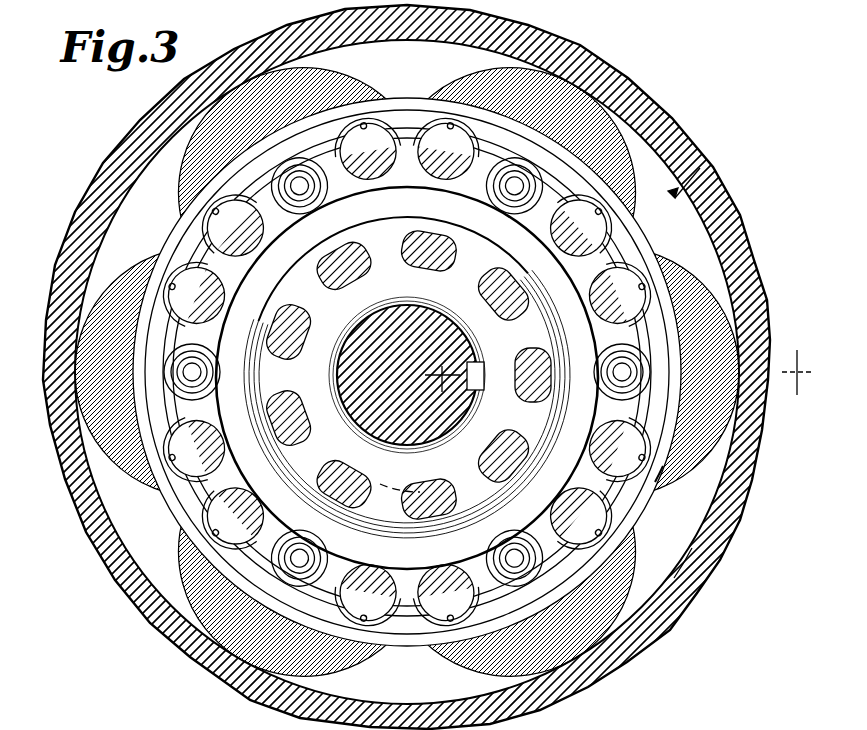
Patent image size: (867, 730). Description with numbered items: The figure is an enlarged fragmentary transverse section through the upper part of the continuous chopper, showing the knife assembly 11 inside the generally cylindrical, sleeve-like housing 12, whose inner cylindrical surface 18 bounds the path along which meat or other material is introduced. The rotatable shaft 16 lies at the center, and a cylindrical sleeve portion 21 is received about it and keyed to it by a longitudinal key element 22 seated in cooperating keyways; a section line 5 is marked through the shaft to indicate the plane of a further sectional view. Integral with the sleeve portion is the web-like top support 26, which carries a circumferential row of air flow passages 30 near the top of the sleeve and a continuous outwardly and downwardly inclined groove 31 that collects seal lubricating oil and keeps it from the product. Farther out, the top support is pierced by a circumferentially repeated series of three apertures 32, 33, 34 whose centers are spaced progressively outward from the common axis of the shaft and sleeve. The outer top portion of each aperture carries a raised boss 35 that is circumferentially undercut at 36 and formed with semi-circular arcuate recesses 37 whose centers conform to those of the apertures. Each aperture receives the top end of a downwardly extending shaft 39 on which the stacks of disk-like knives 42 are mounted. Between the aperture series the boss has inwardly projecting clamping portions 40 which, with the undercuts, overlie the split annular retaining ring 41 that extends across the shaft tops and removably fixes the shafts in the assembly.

The section line 5- 5 is at (617, 359).
The knife assembly 11 is at (705, 165).
The housing 12 is at (725, 207).
The shaft 16 is at (400, 306).
The inner cylindrical surface 18 is at (708, 548).
The sleeve portion 21 is at (452, 462).
The key element 22 is at (485, 360).
The top support 26 is at (432, 568).
The air flow passages 30 is at (345, 284).
The groove 31 is at (392, 488).
The aperture 32 is at (292, 206).
The aperture 33 is at (283, 255).
The aperture 34 is at (368, 177).
The raised boss 35 is at (405, 645).
The undercut 36 is at (318, 140).
The arcuate recesses 37 is at (372, 120).
The shaft 39 is at (318, 200).
The clamping portions 40 is at (300, 208).
The retaining ring 41 is at (660, 487).
The knife 42 is at (318, 92).